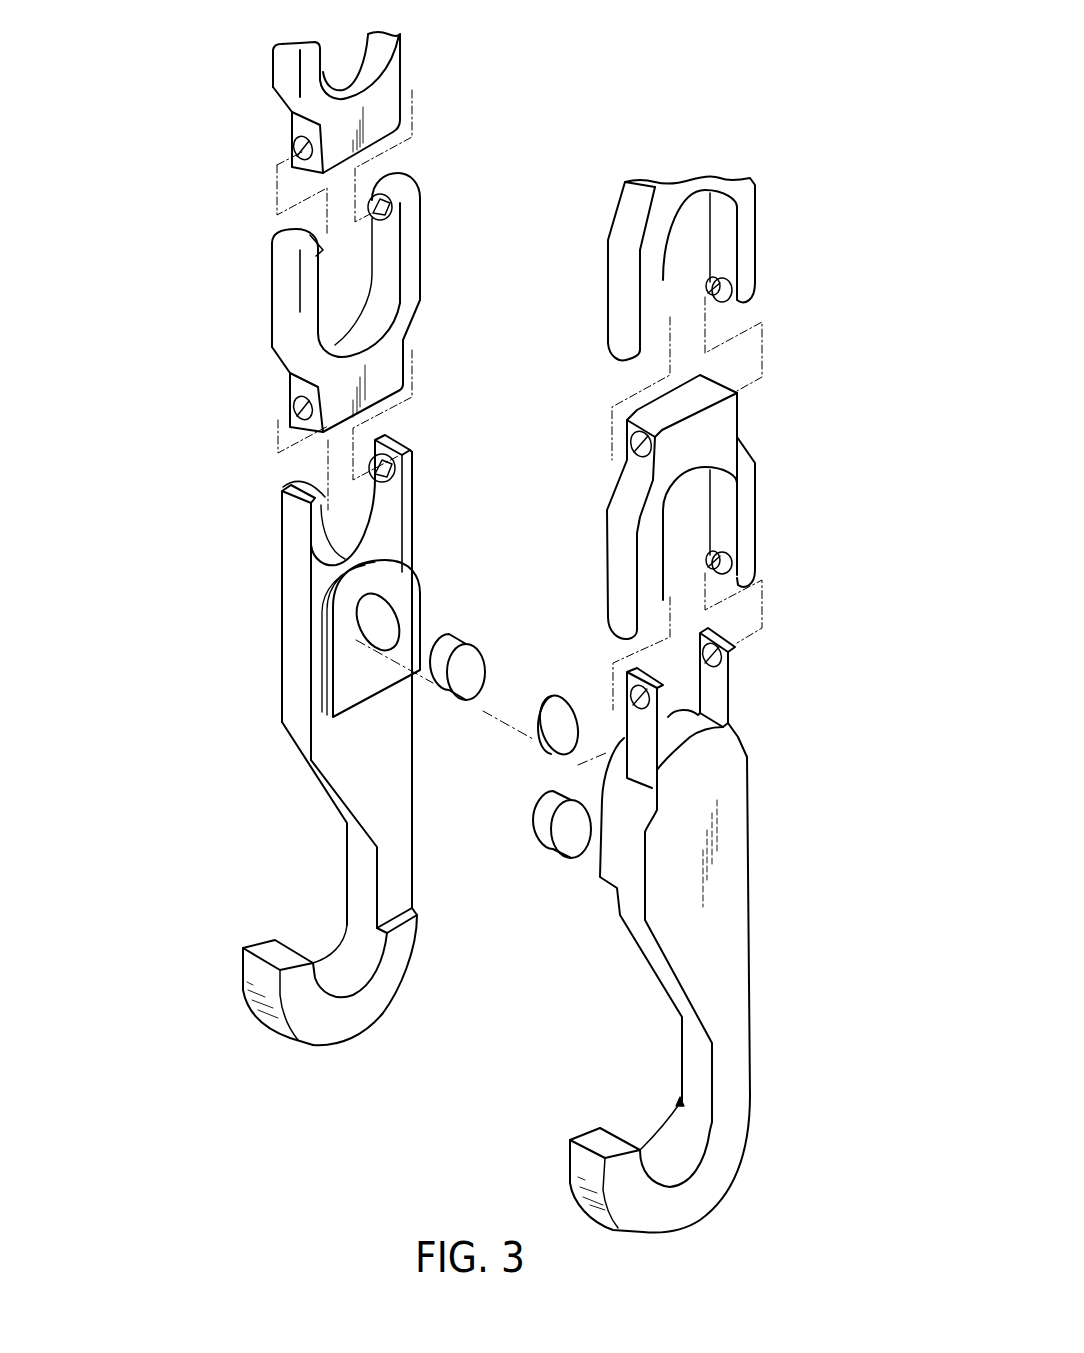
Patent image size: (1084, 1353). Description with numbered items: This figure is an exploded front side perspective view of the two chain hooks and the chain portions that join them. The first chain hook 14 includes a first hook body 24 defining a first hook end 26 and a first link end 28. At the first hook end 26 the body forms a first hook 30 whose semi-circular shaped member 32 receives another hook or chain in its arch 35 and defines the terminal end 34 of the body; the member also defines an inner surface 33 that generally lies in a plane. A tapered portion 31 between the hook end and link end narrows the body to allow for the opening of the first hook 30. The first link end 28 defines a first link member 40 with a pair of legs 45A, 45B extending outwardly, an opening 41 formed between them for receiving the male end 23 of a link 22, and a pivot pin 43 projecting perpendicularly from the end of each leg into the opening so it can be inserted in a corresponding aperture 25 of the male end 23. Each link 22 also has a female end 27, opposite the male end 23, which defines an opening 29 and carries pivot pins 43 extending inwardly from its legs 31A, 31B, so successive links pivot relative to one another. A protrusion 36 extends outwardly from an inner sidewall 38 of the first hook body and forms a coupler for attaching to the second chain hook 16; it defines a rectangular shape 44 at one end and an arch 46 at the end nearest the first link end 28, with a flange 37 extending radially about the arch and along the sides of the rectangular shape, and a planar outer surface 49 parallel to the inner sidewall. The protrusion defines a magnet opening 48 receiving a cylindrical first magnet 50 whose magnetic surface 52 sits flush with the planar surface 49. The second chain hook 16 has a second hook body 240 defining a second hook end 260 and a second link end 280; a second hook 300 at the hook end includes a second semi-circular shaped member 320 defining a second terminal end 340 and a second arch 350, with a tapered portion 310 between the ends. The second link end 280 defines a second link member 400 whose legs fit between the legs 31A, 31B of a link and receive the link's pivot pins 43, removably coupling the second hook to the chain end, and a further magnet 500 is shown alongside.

The first chain hook 14 is at (317, 777).
The second chain hook 16 is at (738, 830).
The link 22 is at (413, 52).
The male end 23 is at (383, 380).
The first hook body 24 is at (292, 727).
The aperture 25 is at (297, 150).
The first hook end 26 is at (255, 1003).
The female end 27 is at (252, 282).
The first link end 28 is at (282, 503).
The opening 29 is at (360, 278).
The first hook 30 is at (387, 987).
The tapered portion 31 is at (397, 787).
The leg 31A is at (283, 277).
The leg 31B is at (419, 213).
The semi-circular shaped member 32 is at (340, 1010).
The inner surface 33 is at (312, 1022).
The terminal end 34 is at (262, 953).
The arch 35 is at (343, 967).
The protrusion 36 is at (420, 587).
The flange 37 is at (323, 707).
The inner sidewall 38 is at (395, 766).
The first link member 40 is at (426, 530).
The opening 41 is at (330, 527).
The pivot pin 43 is at (385, 197).
The rectangular shape 44 is at (407, 653).
The leg 45A is at (290, 525).
The leg 45B is at (414, 487).
The arch 46 is at (343, 603).
The magnet opening 48 is at (394, 613).
The planar outer surface 49 is at (373, 694).
The first magnet 50 is at (484, 660).
The magnetic surface 52 is at (471, 692).
The second hook body 240 is at (653, 925).
The second hook end 260 is at (730, 1142).
The second link end 280 is at (740, 680).
The second hook 300 is at (640, 1213).
The tapered portion 310 is at (730, 950).
The second semi-circular shaped member 320 is at (672, 1205).
The second terminal end 340 is at (593, 1137).
The second arch 350 is at (663, 1158).
The second link member 400 is at (742, 713).
The pivot pin 500 is at (567, 853).